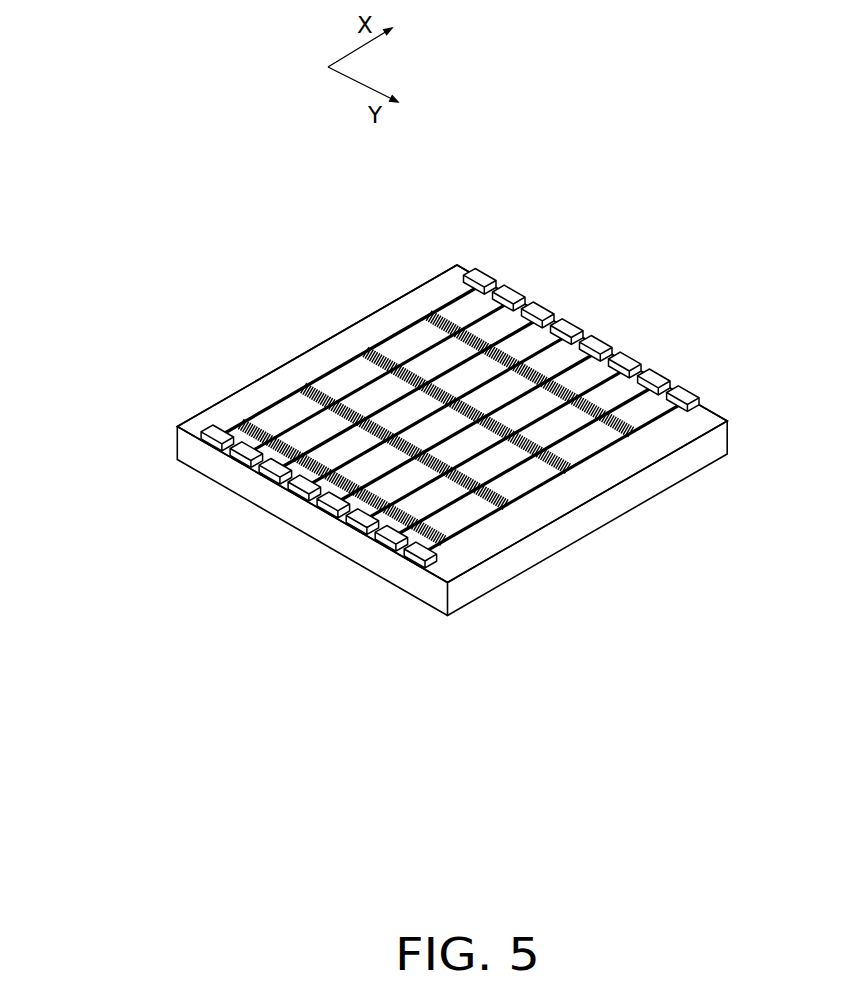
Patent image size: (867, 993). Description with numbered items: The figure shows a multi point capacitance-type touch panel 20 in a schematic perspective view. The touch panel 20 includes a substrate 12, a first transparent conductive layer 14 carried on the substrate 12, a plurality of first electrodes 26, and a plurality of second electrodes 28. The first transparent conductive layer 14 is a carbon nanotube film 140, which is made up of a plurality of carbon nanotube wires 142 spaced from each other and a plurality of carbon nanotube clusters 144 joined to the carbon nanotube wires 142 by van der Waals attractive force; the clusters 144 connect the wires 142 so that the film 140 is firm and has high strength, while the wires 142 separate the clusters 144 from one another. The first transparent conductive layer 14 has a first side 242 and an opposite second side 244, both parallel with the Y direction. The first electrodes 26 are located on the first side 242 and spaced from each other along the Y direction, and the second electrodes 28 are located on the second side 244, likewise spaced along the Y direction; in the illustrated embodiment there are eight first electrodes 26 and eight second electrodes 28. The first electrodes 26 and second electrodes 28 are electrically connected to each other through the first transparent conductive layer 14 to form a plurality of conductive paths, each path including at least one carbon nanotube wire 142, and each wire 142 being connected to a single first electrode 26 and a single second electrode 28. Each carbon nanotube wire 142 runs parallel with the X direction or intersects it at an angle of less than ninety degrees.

The substrate 12 is at (705, 458).
The first transparent conductive layer 14 is at (708, 418).
The touch panel 20 is at (630, 185).
The first electrodes 26 is at (277, 478).
The second electrodes 28 is at (614, 340).
The carbon nanotube film 140 is at (305, 244).
The carbon nanotube wires 142 is at (392, 328).
The carbon nanotube clusters 144 is at (437, 313).
The first side 242 is at (217, 450).
The second side 244 is at (672, 388).